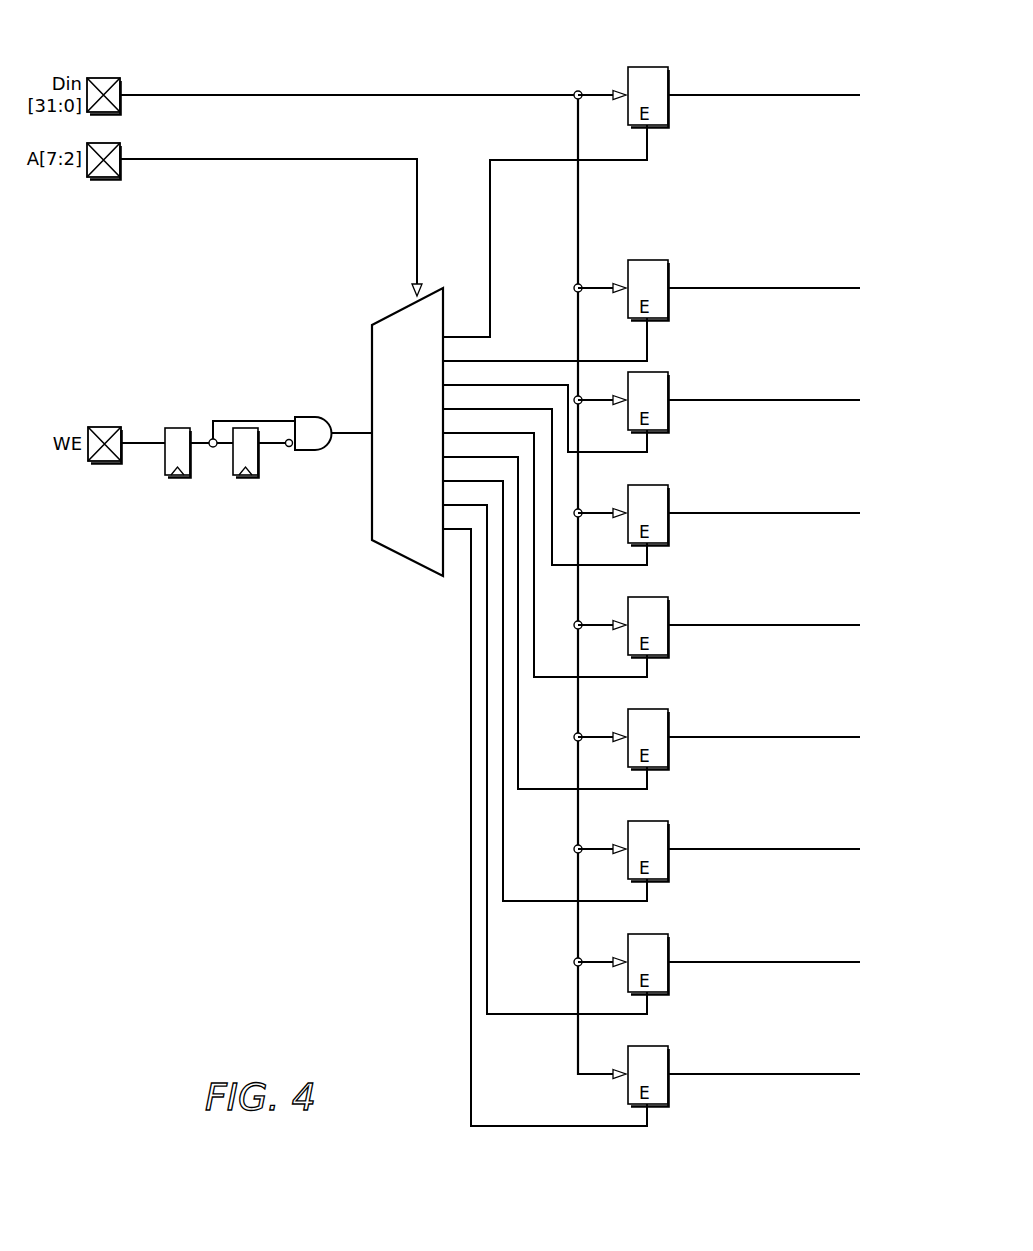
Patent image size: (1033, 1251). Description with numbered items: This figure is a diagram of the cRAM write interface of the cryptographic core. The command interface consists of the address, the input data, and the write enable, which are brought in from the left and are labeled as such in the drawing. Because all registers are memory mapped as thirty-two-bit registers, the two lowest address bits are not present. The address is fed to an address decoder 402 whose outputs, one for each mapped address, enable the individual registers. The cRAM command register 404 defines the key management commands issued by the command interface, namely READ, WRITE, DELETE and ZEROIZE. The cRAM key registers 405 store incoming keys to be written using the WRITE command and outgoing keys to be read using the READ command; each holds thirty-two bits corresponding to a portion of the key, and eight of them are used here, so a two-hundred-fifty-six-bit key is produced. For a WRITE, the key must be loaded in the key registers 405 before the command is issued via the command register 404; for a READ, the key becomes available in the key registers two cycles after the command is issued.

The address decoder 402 is at (408, 560).
The cRAM command register 404 is at (710, 107).
The cRAM key registers 405 is at (787, 253).